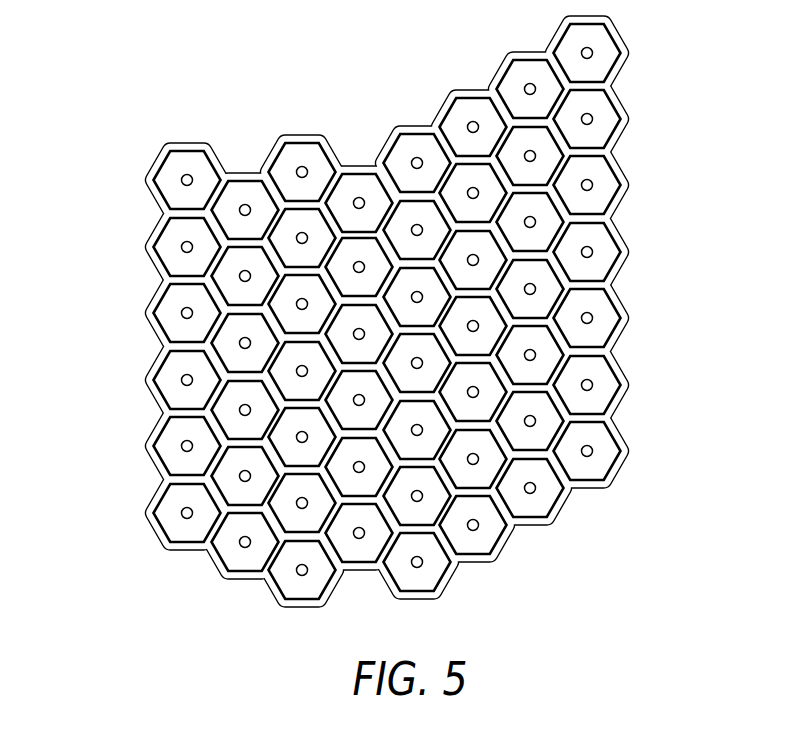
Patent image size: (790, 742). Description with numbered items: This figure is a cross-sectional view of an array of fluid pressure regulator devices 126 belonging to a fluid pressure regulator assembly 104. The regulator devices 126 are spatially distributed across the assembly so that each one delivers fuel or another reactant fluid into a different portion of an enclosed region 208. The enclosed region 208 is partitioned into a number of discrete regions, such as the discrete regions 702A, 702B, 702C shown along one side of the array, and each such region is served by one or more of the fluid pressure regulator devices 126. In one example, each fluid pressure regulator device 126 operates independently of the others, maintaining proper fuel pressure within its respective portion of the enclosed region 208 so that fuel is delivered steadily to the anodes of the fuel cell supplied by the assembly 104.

The fluid pressure regulator assembly 104 is at (159, 58).
The fluid pressure regulator device 126 is at (181, 181).
The enclosed region 208 is at (624, 343).
The discrete region 702A is at (166, 511).
The discrete region 702B is at (166, 442).
The discrete region 702C is at (166, 376).